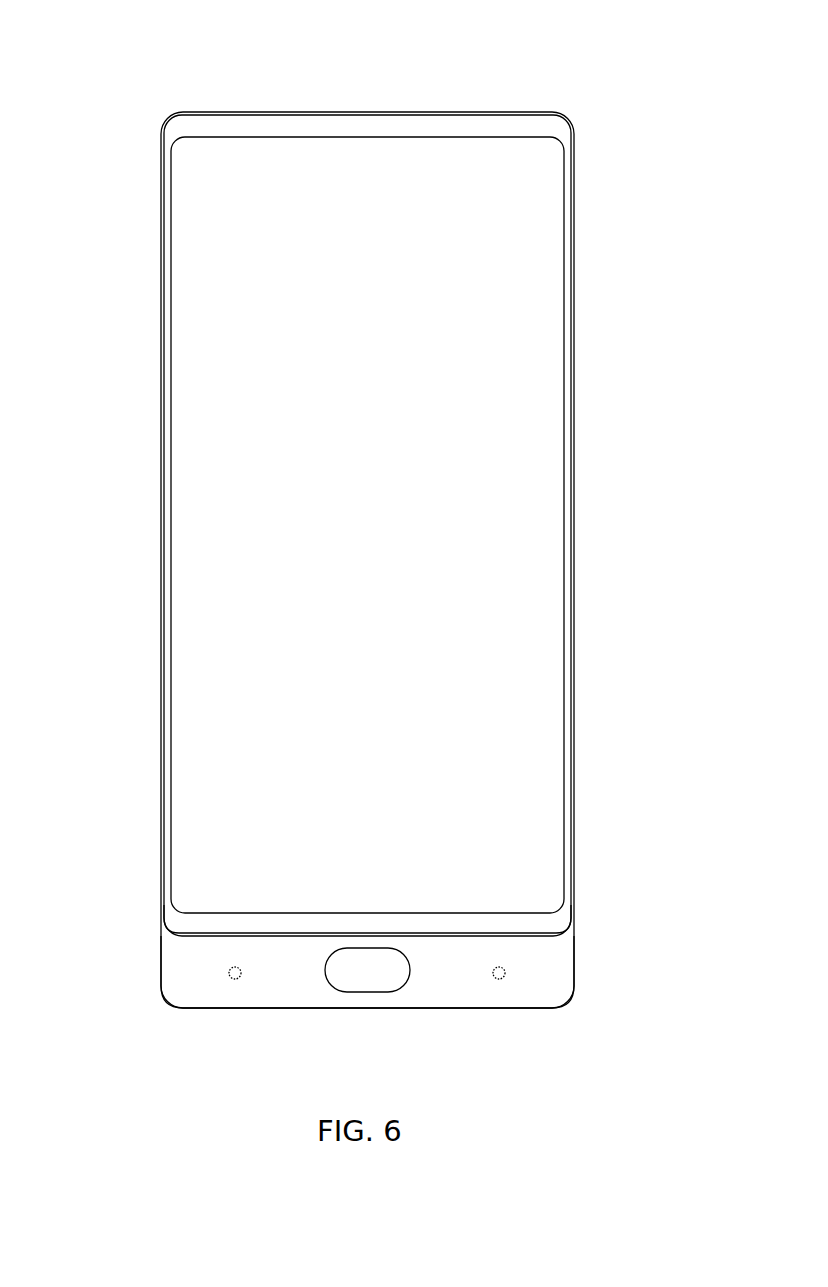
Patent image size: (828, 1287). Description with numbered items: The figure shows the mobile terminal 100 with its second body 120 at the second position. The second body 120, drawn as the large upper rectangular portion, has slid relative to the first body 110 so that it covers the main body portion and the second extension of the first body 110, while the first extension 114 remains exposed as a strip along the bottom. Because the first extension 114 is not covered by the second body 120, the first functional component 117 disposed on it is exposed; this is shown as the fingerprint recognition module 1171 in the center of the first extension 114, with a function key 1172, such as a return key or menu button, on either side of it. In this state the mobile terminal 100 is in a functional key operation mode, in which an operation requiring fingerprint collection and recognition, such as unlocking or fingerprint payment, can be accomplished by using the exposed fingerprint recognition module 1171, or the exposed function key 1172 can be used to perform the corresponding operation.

The mobile terminal 100 is at (391, 55).
The first body 110 is at (583, 935).
The first extension 114 is at (548, 968).
The second body 120 is at (172, 407).
The first functional component 117 is at (441, 1010).
The fingerprint recognition module 1171 is at (390, 975).
The function key 1172 is at (240, 978).